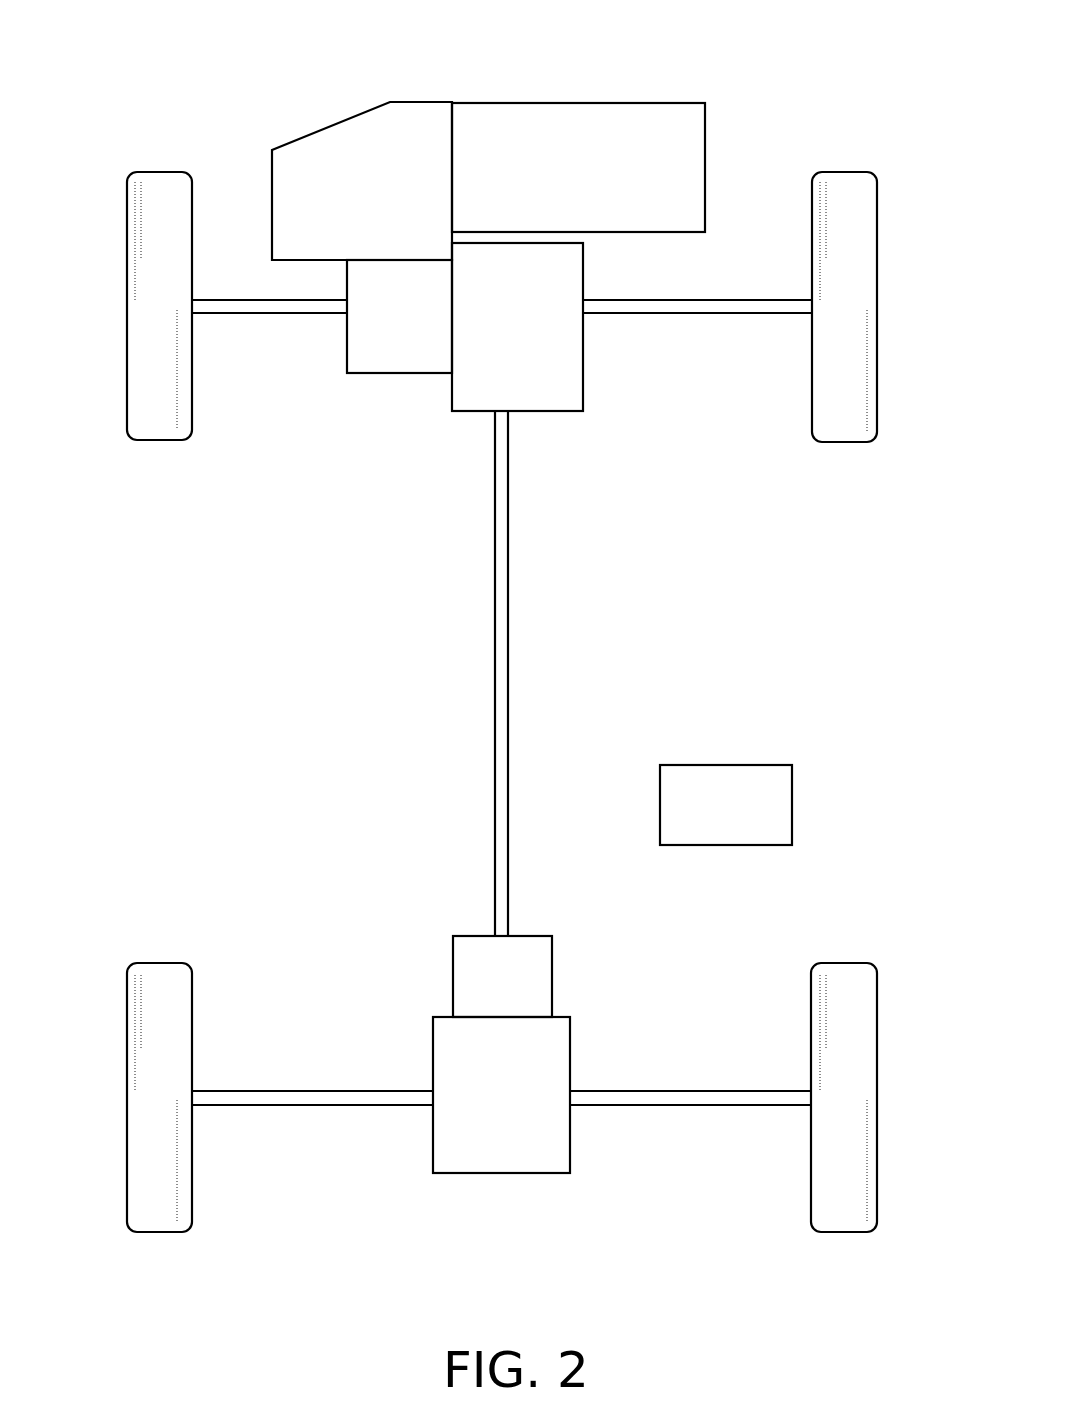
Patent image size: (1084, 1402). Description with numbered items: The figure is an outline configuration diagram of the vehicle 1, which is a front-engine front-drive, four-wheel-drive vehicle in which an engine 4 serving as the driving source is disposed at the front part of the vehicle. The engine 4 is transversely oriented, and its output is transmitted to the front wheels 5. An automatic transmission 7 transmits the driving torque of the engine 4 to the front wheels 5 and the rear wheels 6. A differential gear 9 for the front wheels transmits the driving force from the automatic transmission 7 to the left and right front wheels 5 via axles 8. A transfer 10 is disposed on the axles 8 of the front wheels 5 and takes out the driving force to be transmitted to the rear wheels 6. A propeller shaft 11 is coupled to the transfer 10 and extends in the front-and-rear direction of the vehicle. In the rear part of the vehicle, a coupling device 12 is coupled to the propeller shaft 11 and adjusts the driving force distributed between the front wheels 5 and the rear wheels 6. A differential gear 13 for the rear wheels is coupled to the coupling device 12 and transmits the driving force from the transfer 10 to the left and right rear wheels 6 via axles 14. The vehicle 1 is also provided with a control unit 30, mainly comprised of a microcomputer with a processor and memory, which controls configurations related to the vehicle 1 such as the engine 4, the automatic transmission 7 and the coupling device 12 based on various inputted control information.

The vehicle 1 is at (238, 85).
The engine 4 is at (585, 102).
The front wheels 5 is at (160, 170).
The rear wheels 6 is at (160, 961).
The automatic transmission 7 is at (340, 126).
The axles 8 is at (283, 316).
The differential gear for the front wheels 9 is at (393, 376).
The transfer 10 is at (540, 413).
The propeller shaft 11 is at (495, 592).
The coupling device 12 is at (452, 978).
The differential gear for the rear wheels 13 is at (540, 1176).
The axles 14 is at (285, 1108).
The control unit 30 is at (750, 764).